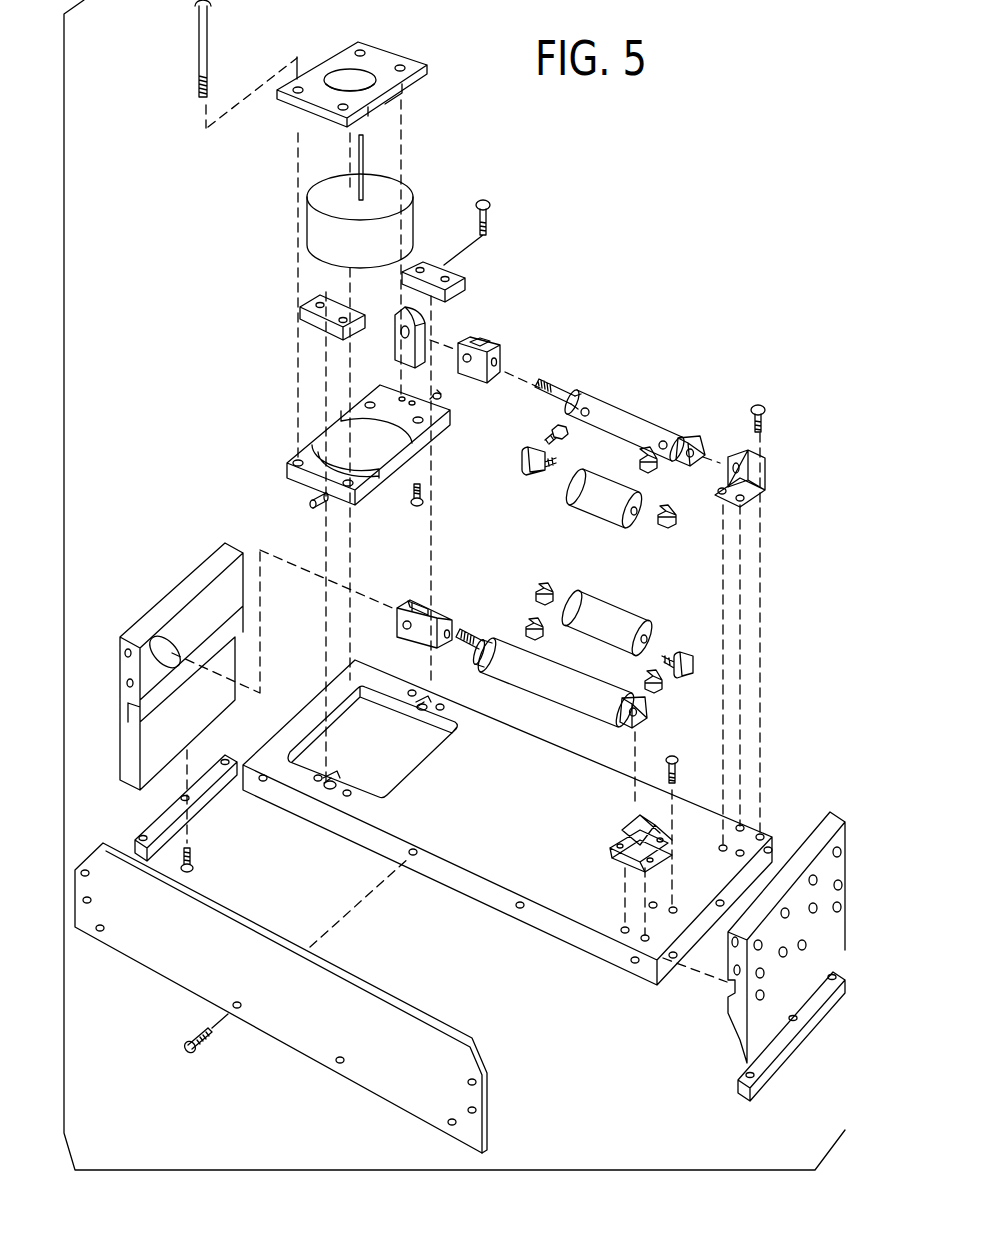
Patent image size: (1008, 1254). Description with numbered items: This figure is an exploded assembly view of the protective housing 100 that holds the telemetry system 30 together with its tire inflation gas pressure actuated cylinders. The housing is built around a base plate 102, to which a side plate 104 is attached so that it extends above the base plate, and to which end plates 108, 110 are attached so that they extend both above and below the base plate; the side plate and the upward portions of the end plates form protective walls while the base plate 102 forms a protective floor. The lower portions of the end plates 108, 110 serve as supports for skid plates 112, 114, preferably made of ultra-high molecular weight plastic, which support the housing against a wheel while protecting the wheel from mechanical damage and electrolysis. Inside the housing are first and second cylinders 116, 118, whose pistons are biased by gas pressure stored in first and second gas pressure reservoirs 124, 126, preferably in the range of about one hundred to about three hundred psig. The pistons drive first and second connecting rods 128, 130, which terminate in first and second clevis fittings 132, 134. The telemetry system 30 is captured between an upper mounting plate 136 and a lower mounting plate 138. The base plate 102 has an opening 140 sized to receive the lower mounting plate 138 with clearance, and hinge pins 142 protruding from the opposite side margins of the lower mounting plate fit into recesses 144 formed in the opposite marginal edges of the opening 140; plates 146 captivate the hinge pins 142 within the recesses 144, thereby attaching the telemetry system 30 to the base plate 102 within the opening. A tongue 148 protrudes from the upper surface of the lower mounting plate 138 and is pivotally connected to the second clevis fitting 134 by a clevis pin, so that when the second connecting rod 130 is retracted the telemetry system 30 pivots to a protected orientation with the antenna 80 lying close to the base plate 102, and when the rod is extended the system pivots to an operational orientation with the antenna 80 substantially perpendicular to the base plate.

The telemetry system 30 is at (397, 197).
The antenna 80 is at (363, 153).
The protective housing 100 is at (147, 425).
The base plate 102 is at (507, 826).
The side plate 104 is at (299, 1023).
The end plate 108 is at (737, 1020).
The end plate 110 is at (180, 597).
The skid plate 112 is at (780, 1058).
The skid plate 114 is at (207, 797).
The first cylinder 116 is at (513, 643).
The second cylinder 118 is at (611, 408).
The first gas pressure reservoir 124 is at (603, 615).
The second gas pressure reservoir 126 is at (593, 493).
The first connecting rod 128 is at (460, 647).
The second connecting rod 130 is at (573, 373).
The first clevis fitting 132 is at (435, 613).
The second clevis fitting 134 is at (490, 347).
The upper mounting plate 136 is at (382, 58).
The lower mounting plate 138 is at (315, 470).
The opening 140 is at (392, 762).
The hinge pins 142 is at (313, 507).
The recesses 144 is at (398, 745).
The plates 146 is at (453, 273).
The tongue 148 is at (420, 320).